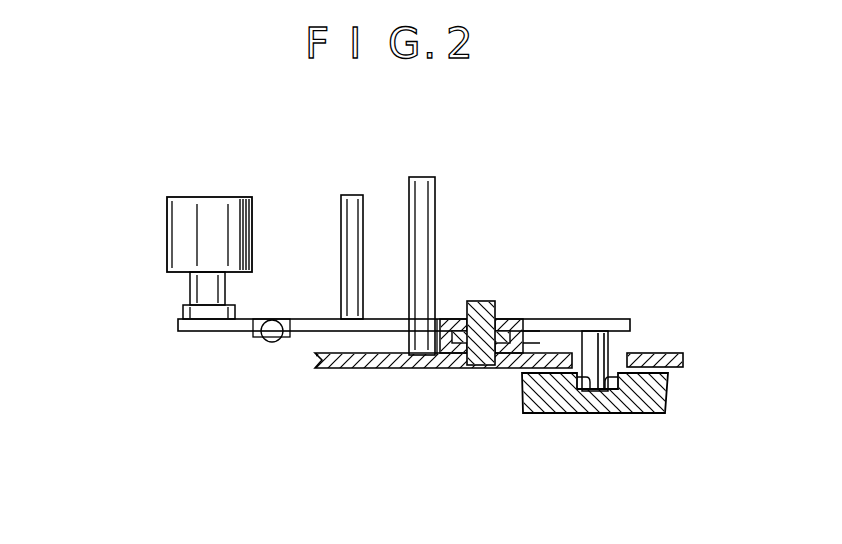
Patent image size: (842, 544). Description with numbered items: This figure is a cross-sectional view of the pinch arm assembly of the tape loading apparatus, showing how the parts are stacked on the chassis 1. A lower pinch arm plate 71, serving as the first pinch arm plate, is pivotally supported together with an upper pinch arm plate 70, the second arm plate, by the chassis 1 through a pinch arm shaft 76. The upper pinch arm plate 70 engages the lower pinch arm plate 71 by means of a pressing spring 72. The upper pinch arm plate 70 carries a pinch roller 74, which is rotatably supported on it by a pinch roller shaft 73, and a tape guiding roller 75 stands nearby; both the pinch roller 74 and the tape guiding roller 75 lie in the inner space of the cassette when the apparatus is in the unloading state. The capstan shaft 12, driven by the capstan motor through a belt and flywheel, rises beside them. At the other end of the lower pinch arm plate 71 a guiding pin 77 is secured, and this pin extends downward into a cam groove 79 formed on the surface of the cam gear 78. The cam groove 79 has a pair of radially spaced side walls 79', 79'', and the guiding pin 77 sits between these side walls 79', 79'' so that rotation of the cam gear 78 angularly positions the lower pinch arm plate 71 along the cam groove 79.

The chassis 1 is at (378, 370).
The capstan shaft 12 is at (435, 198).
The upper pinch arm plate 70 is at (445, 319).
The lower pinch arm plate 71 is at (588, 319).
The pressing spring 72 is at (264, 342).
The pinch roller shaft 73 is at (190, 289).
The pinch roller 74 is at (167, 233).
The tape guiding roller 75 is at (341, 217).
The pinch arm shaft 76 is at (493, 301).
The guiding pin 77 is at (612, 345).
The cam gear 78 is at (668, 395).
The cam groove 79 is at (607, 456).
The side wall 79' is at (576, 431).
The side wall 79'' is at (649, 448).